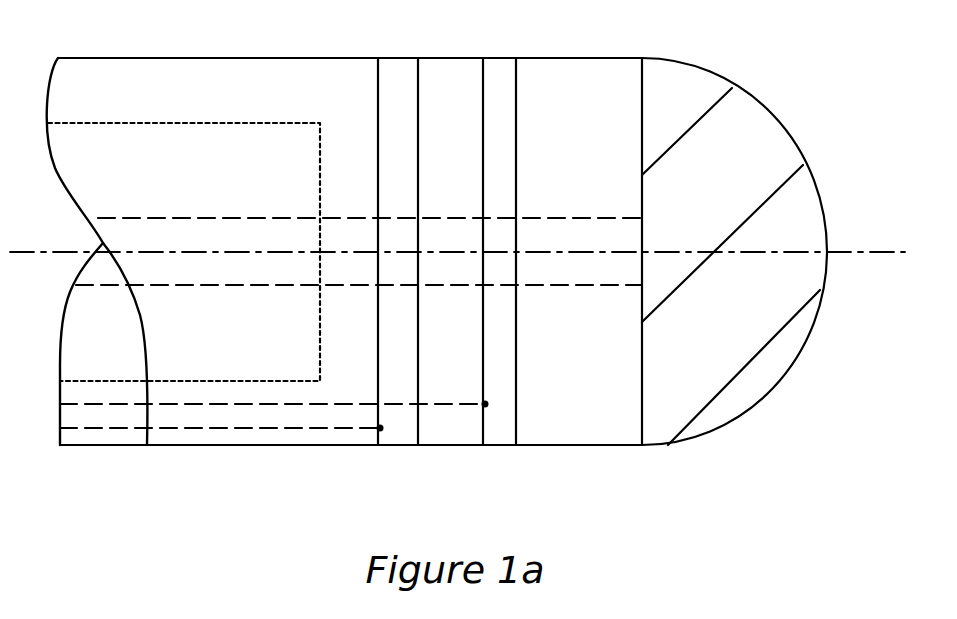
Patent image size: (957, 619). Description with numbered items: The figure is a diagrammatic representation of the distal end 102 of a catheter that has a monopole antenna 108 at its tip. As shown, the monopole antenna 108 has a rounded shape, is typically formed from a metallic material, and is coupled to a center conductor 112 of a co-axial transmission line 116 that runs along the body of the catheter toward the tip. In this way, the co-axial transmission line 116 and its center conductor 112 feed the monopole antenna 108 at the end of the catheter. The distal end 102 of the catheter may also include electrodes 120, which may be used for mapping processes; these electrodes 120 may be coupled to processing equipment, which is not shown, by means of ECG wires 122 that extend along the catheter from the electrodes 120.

The distal end 102 is at (767, 90).
The monopole antenna 108 is at (716, 412).
The center conductor 112 is at (588, 285).
The co-axial transmission line 116 is at (98, 384).
The electrodes 120 is at (400, 432).
The ECG wires 122 is at (222, 403).